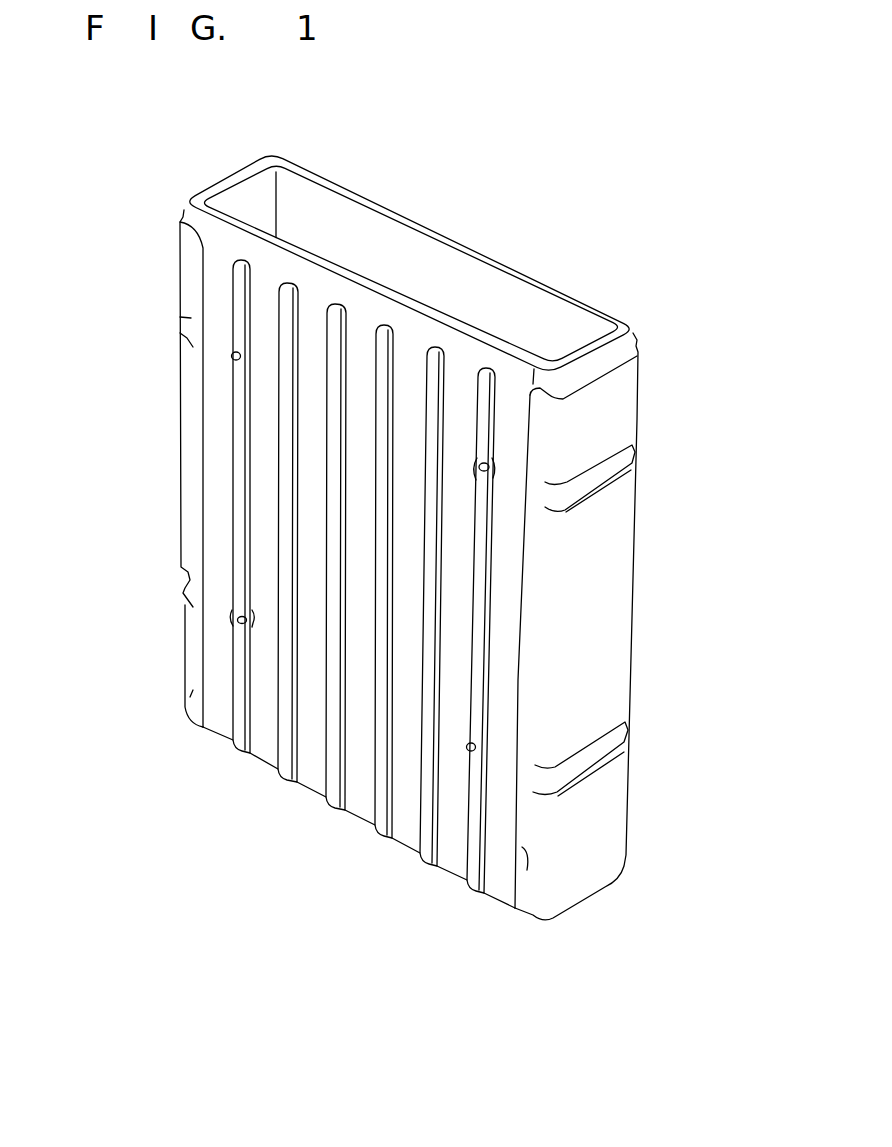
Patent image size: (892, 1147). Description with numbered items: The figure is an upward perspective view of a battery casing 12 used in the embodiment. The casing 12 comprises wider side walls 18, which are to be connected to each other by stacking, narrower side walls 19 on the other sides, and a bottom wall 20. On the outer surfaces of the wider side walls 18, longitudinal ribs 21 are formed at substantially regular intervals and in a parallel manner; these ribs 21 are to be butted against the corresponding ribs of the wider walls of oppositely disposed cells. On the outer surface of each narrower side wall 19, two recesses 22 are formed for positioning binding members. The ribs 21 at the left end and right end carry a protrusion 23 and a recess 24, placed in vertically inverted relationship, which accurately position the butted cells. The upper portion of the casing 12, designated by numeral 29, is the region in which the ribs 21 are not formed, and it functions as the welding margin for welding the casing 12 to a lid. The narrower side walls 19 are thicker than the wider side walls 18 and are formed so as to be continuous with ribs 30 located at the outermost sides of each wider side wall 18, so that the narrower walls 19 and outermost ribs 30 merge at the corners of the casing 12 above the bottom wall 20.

The casing 12 is at (157, 265).
The wider side walls 18 is at (523, 272).
The narrower side walls 19 is at (212, 186).
The bottom wall 20 is at (357, 813).
The longitudinal ribs 21 is at (243, 483).
The recesses 22 is at (600, 473).
The protrusion 23 is at (232, 354).
The recess 24 is at (484, 458).
The upper portion of the casing 29 is at (321, 288).
The ribs 30 is at (185, 707).